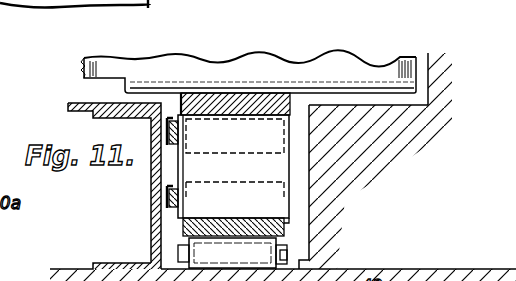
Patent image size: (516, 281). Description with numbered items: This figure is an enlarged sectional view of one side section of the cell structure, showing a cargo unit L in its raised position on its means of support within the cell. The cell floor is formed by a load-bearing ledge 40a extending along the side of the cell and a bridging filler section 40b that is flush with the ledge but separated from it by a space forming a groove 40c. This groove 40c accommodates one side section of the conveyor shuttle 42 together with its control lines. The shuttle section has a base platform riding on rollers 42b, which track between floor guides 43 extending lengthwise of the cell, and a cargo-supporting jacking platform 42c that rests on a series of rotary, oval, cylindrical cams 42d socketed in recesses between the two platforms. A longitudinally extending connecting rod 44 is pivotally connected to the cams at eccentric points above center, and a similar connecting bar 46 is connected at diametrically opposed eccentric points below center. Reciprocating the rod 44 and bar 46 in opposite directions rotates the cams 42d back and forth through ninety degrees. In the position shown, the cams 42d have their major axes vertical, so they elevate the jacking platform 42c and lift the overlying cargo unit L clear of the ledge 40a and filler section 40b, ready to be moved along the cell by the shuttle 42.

The cargo unit L is at (84, 66).
The conveyor shuttle 42 is at (172, 107).
The jacking platform 42c is at (253, 98).
The rotary oval cylindrical cam 42d is at (233, 166).
The roller 42b is at (175, 219).
The load-bearing ledge 40a is at (324, 103).
The bridging filler section 40b is at (76, 103).
The groove 40c is at (297, 194).
The floor guide 43 is at (182, 267).
The connecting rod 44 is at (166, 129).
The connecting bar 46 is at (166, 191).